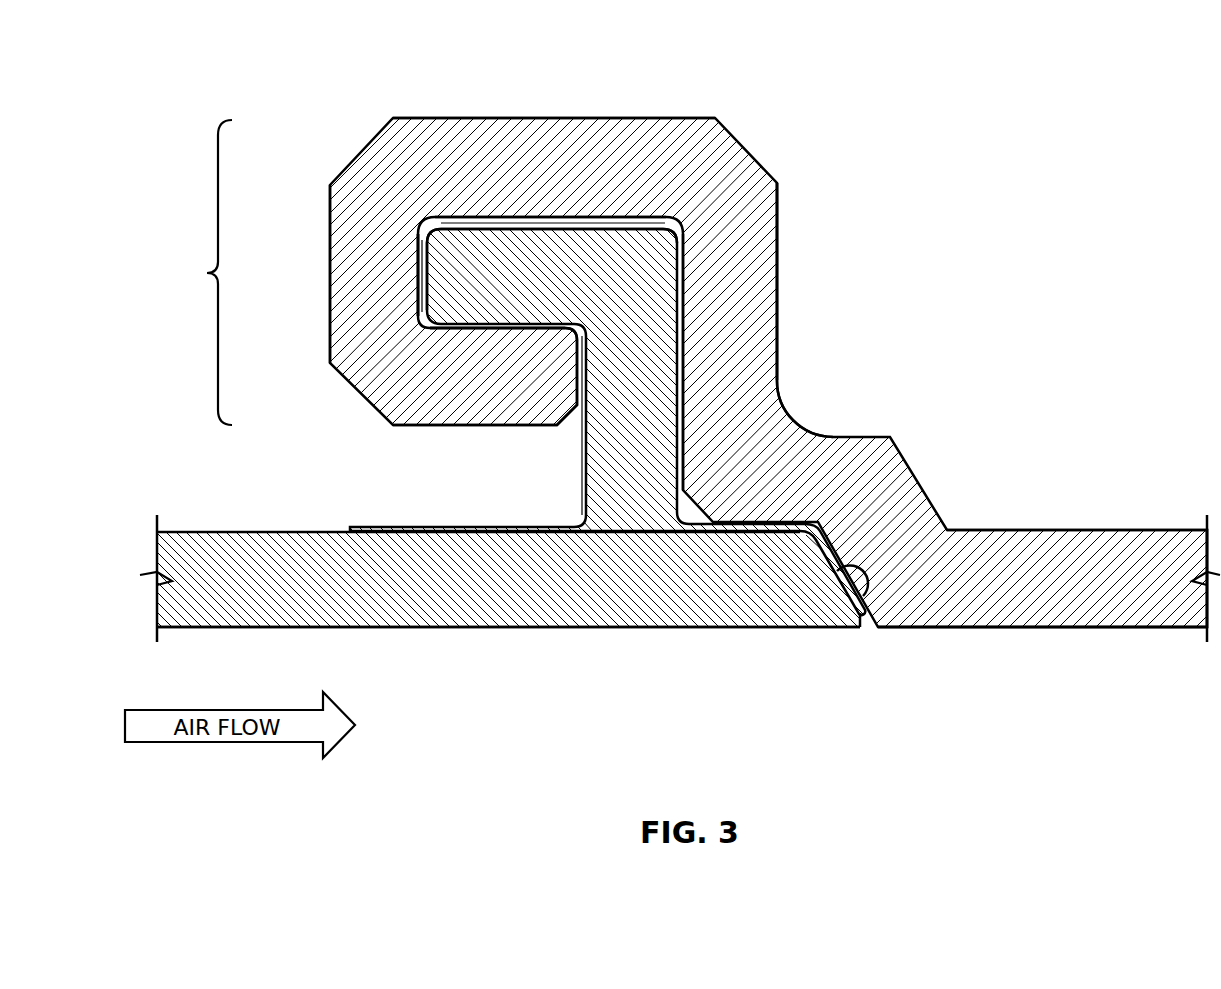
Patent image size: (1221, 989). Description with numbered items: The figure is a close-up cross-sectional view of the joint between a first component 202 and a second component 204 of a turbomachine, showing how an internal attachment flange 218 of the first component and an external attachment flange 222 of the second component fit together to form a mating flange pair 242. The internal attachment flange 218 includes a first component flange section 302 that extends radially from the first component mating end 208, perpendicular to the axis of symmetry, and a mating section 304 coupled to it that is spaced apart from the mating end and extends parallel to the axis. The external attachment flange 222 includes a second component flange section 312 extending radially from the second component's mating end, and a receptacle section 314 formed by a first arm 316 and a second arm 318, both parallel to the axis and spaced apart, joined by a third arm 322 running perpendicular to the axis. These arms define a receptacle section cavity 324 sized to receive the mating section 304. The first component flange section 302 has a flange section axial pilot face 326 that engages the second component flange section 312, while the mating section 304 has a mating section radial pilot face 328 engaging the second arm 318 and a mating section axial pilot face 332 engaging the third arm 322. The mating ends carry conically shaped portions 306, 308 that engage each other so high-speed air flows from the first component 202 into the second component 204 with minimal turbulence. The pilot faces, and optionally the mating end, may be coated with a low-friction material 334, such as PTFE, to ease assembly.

The first component 202 is at (207, 540).
The second component 204 is at (1118, 545).
The first component mating end 208 is at (541, 674).
The internal attachment flange 218 is at (512, 210).
The external attachment flange 222 is at (795, 288).
The mating flange pair 242 is at (205, 274).
The first component flange section 302 is at (609, 421).
The mating section 304 is at (495, 286).
The conically shaped portion 306 is at (858, 572).
The conically shaped portion 308 is at (867, 630).
The second component flange section 312 is at (704, 331).
The receptacle section 314 is at (352, 150).
The first arm 316 is at (533, 181).
The second arm 318 is at (470, 394).
The third arm 322 is at (349, 294).
The receptacle section cavity 324 is at (469, 214).
The flange section axial pilot face 326 is at (677, 388).
The mating section radial pilot face 328 is at (462, 328).
The mating section axial pilot face 332 is at (418, 298).
The low-friction material 334 is at (628, 215).